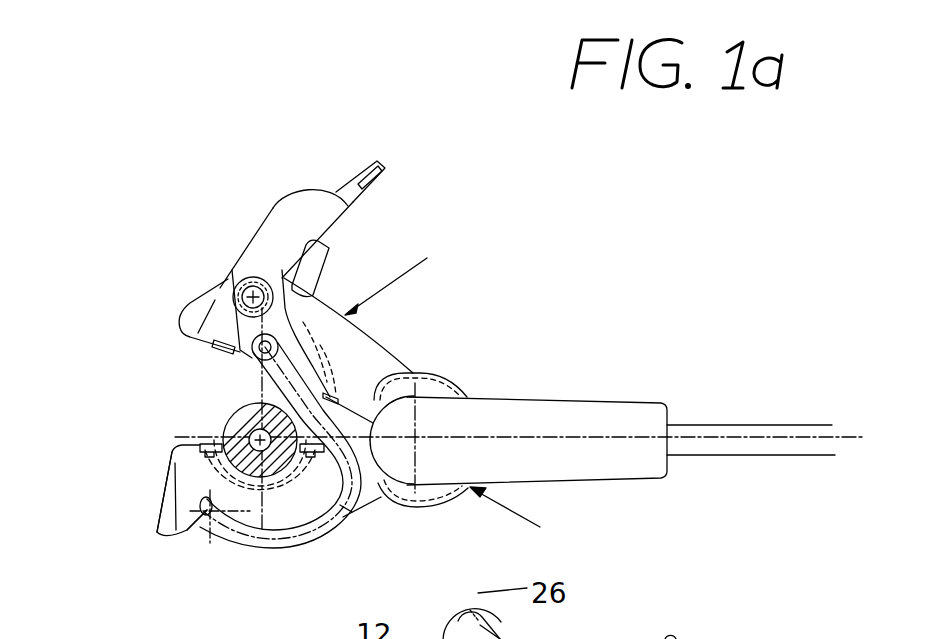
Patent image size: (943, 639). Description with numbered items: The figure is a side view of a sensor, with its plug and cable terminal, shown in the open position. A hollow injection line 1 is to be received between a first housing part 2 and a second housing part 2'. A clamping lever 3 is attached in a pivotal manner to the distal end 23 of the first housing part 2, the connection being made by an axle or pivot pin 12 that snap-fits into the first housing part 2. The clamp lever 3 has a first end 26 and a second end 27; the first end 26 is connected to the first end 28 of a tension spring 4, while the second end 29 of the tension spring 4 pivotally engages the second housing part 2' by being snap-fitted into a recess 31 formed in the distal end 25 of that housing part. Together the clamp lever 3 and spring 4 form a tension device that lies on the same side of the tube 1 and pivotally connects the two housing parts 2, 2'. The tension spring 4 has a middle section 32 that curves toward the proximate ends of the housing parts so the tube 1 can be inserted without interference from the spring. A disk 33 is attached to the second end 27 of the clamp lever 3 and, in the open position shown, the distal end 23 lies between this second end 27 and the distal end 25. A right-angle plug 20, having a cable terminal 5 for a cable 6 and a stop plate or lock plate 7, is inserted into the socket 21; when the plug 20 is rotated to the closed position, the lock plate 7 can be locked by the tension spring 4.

The injection line 1 is at (243, 418).
The first housing part 2 is at (387, 392).
The second housing part 2' is at (137, 494).
The clamping lever 3 is at (310, 208).
The tension spring 4 is at (293, 545).
The cable terminal 5 is at (512, 417).
The cable 6 is at (730, 433).
The stop plate or lock plate 7 is at (428, 393).
The axle or pivot pin 12 is at (244, 290).
The plug 20 is at (478, 499).
The socket 21 is at (405, 273).
The distal end of first housing part 23 is at (180, 313).
The distal end of second housing part 25 is at (167, 477).
The first end of clamp lever 26 is at (250, 370).
The second end of clamp lever 27 is at (337, 190).
The first end of tension spring 28 is at (231, 356).
The second end of tension spring 29 is at (207, 512).
The recess 31 is at (197, 495).
The middle section of tension spring 32 is at (343, 513).
The disk 33 is at (367, 183).